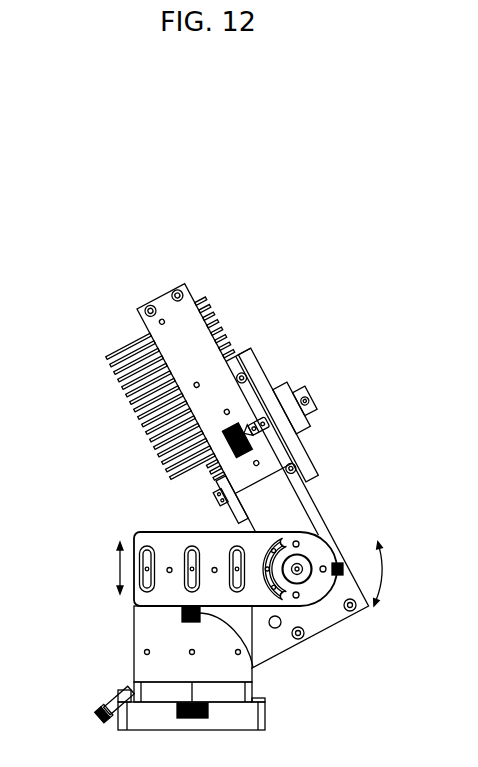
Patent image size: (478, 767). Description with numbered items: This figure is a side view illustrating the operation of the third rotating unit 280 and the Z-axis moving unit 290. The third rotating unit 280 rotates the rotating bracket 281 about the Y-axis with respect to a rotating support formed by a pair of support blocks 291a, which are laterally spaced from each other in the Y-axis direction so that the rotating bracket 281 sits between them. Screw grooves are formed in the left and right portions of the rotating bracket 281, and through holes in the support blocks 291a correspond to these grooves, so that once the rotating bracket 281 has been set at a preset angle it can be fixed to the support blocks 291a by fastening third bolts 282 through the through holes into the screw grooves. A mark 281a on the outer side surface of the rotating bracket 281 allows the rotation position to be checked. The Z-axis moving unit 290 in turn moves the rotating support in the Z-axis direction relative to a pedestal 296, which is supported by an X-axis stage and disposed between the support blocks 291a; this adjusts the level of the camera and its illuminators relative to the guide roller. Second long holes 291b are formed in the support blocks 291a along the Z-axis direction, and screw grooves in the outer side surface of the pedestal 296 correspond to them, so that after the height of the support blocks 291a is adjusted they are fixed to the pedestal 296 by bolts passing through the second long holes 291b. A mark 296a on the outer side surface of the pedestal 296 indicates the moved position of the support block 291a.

The third rotating unit 280 is at (282, 501).
The rotating bracket 281 is at (264, 501).
The mark 281a is at (335, 578).
The third bolt 282 is at (299, 567).
The Z-axis moving unit 290 is at (172, 575).
The support block 291a is at (157, 596).
The second long hole 291b is at (147, 568).
The pedestal 296 is at (199, 668).
The mark 296a is at (255, 668).